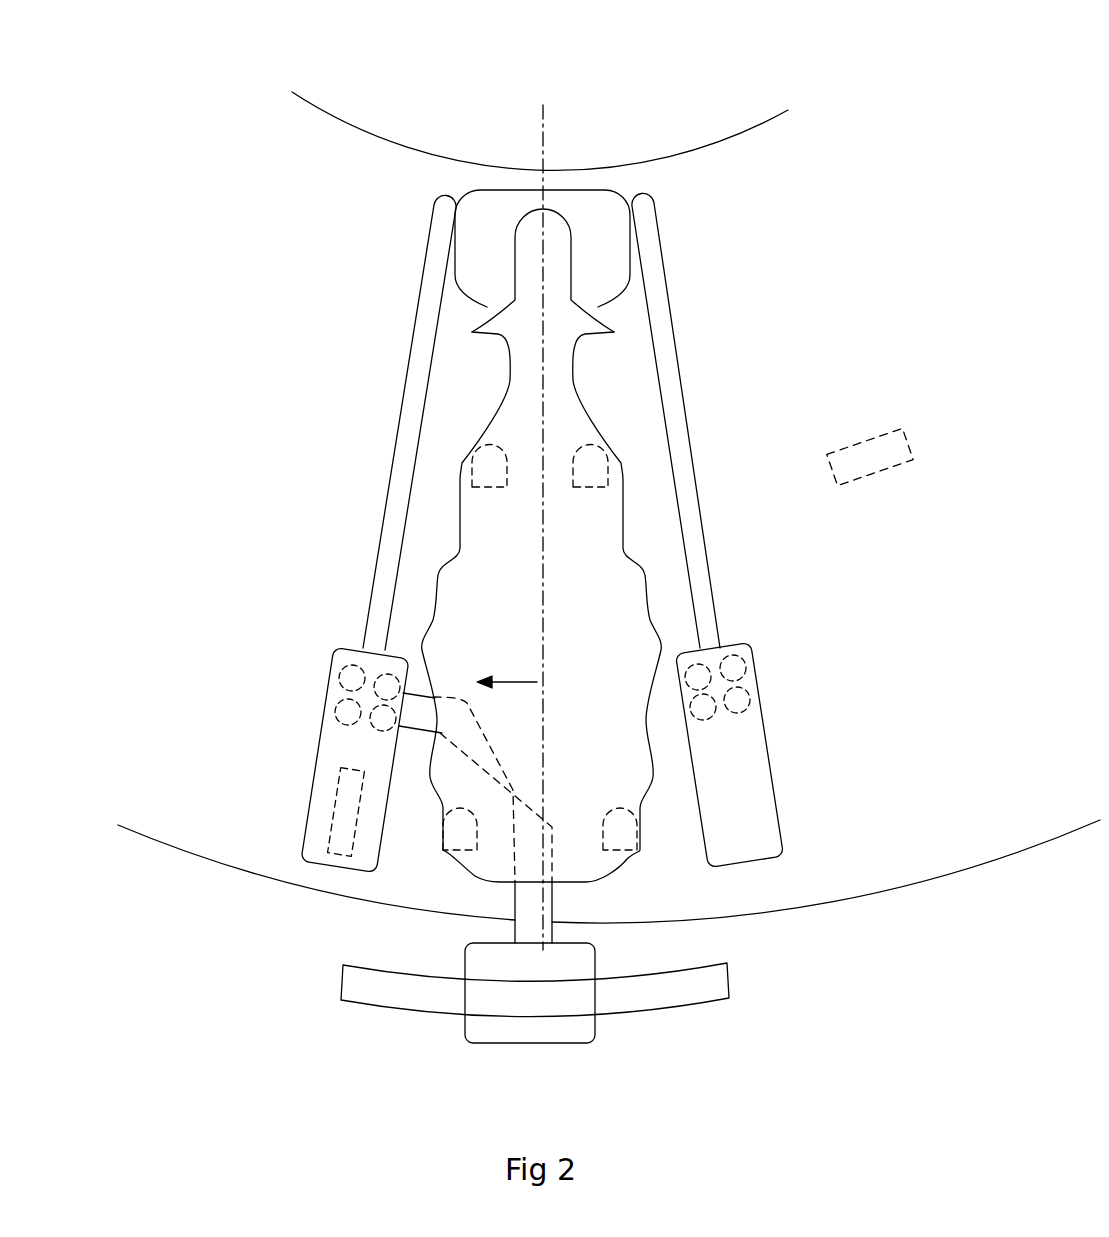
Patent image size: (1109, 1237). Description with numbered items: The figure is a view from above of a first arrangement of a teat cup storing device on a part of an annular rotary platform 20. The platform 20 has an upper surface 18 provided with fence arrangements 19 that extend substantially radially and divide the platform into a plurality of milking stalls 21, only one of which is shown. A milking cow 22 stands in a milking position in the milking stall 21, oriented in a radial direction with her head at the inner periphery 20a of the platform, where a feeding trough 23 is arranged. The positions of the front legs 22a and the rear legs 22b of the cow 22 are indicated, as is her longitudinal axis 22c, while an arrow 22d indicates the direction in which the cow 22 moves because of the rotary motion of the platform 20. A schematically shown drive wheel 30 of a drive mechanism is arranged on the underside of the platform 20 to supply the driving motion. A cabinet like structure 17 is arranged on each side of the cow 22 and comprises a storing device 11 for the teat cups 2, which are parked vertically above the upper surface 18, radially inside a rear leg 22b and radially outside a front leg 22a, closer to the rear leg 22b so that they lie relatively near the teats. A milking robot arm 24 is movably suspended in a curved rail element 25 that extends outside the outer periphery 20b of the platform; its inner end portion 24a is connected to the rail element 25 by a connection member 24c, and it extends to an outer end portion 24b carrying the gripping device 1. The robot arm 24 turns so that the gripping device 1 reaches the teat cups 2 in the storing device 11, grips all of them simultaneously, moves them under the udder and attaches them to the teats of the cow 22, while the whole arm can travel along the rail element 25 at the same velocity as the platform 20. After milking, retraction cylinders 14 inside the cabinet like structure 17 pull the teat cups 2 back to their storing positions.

The gripping device 1 is at (407, 713).
The teat cups 2 is at (348, 712).
The storing device 11 is at (499, 712).
The retraction cylinders 14 is at (347, 810).
The cabinet like structure 17 is at (335, 747).
The upper surface 18 is at (790, 248).
The fence arrangements 19 is at (405, 440).
The annular rotary platform 20 is at (283, 268).
The inner periphery 20a is at (377, 135).
The outer periphery 20b is at (158, 845).
The milking stall 21 is at (627, 402).
The milking cow 22 is at (590, 603).
The front legs 22a is at (597, 468).
The rear legs 22b is at (467, 832).
The longitudinal axis 22c is at (543, 157).
The arrow 22d is at (517, 682).
The feeding trough 23 is at (575, 225).
The milking robot arm 24 is at (533, 850).
The inner end portion 24a is at (490, 942).
The outer end portion 24b is at (418, 710).
The connection member 24c is at (543, 965).
The curved rail element 25 is at (382, 988).
The drive wheel 30 is at (867, 467).